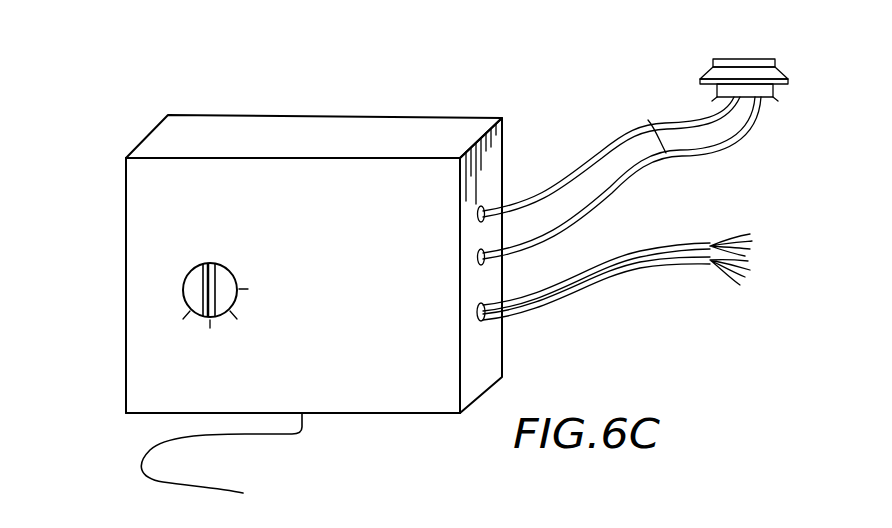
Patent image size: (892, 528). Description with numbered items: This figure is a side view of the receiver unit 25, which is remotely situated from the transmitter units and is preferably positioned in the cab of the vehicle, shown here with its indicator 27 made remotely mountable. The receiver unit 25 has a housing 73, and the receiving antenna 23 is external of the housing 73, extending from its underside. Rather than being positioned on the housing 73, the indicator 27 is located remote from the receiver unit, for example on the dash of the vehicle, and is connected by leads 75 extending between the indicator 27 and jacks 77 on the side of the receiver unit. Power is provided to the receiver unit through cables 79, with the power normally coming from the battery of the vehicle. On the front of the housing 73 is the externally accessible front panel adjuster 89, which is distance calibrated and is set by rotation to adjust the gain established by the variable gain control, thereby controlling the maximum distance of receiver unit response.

The receiving antenna 23 is at (302, 428).
The receiver unit 25 is at (126, 222).
The indicator 27 is at (740, 58).
The housing 73 is at (390, 394).
The leads 75 is at (616, 138).
The jacks 77 is at (477, 219).
The cables 79 is at (632, 256).
The front panel adjuster 89 is at (220, 272).